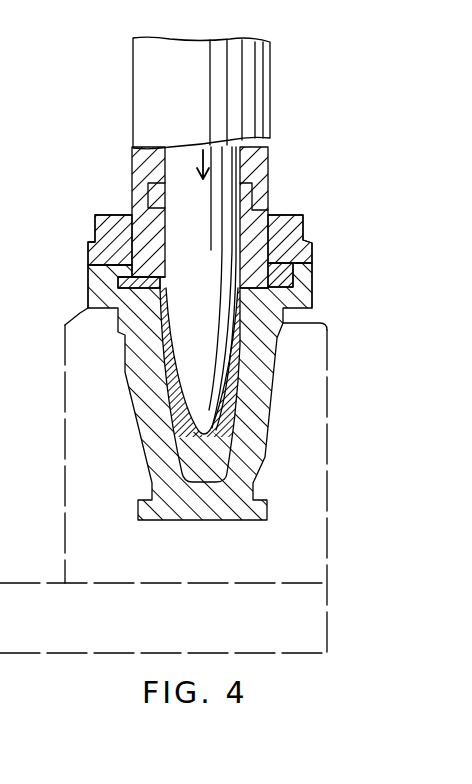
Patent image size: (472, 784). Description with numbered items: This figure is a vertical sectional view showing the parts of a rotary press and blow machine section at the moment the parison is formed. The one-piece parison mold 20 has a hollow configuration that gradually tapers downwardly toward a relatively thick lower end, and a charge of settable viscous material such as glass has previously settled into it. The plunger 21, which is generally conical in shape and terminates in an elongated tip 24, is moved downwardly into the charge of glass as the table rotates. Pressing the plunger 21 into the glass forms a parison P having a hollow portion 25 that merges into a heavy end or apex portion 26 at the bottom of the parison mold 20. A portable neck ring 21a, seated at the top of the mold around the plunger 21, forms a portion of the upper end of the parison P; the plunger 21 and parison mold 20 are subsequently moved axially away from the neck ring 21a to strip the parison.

The parison mold 20 is at (263, 362).
The plunger 21 is at (240, 235).
The portable neck ring 21a is at (293, 277).
The elongated tip 24 is at (215, 417).
The hollow portion 25 is at (242, 323).
The heavy end or apex portion 26 is at (213, 458).
The parison P is at (175, 398).